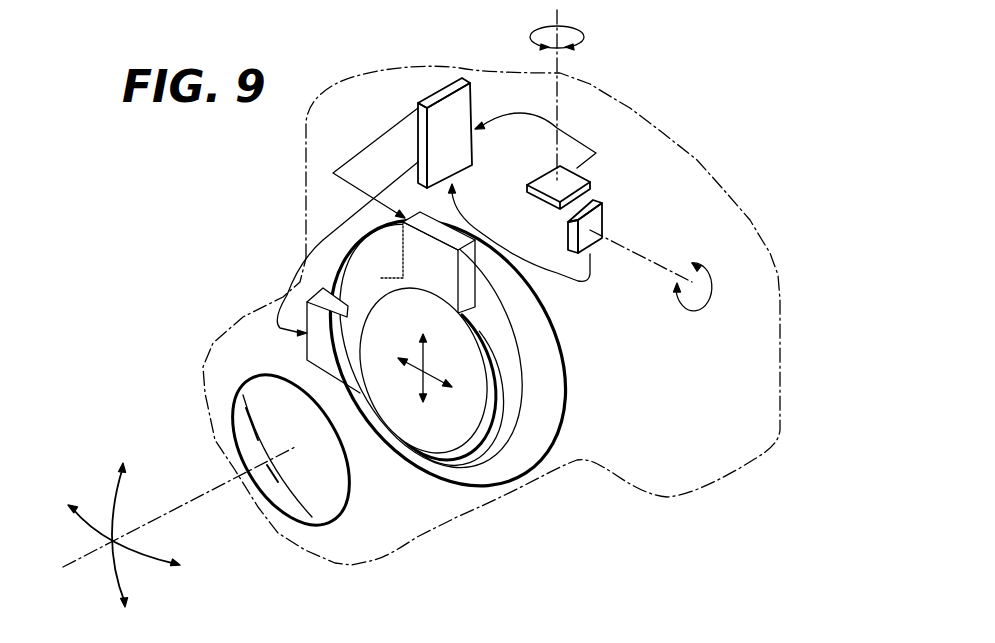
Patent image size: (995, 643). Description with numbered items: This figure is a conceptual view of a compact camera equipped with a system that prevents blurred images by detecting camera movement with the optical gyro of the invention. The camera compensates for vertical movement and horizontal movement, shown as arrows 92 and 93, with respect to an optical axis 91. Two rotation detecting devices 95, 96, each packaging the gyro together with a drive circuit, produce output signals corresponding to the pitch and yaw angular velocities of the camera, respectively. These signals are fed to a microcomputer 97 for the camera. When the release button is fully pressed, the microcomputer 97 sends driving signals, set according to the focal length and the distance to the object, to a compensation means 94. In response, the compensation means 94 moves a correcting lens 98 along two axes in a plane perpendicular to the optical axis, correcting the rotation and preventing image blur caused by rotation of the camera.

The optical axis 91 is at (88, 557).
The arrow indicating vertical movement 92 is at (113, 493).
The arrow indicating horizontal movement 93 is at (88, 530).
The compensation means 94 is at (447, 473).
The rotation detecting device 95 is at (602, 222).
The rotation detecting device 96 is at (546, 172).
The microcomputer 97 is at (473, 108).
The correcting lens 98 is at (423, 428).